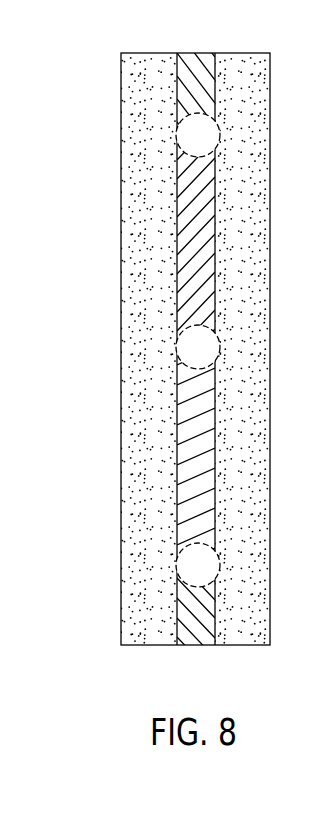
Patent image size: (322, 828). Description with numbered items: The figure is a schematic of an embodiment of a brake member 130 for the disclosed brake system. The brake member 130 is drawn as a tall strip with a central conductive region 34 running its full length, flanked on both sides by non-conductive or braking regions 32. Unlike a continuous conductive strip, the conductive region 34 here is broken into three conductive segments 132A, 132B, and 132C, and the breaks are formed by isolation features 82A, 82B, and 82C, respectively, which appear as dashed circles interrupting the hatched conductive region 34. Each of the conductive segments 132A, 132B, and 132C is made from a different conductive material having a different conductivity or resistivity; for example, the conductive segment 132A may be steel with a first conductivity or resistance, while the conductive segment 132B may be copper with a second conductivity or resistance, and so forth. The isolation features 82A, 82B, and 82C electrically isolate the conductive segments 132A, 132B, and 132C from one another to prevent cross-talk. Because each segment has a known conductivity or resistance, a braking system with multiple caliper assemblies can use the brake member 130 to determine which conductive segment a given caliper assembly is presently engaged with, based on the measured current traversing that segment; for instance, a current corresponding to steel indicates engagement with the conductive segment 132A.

The brake member 130 is at (201, 29).
The non-conductive or braking regions 32 is at (145, 617).
The conductive region 34 is at (196, 646).
The conductive segment 132A is at (186, 77).
The conductive segment 132B is at (187, 244).
The conductive segment 132C is at (187, 431).
The isolation feature 82A is at (188, 137).
The isolation feature 82B is at (187, 346).
The isolation feature 82C is at (187, 566).